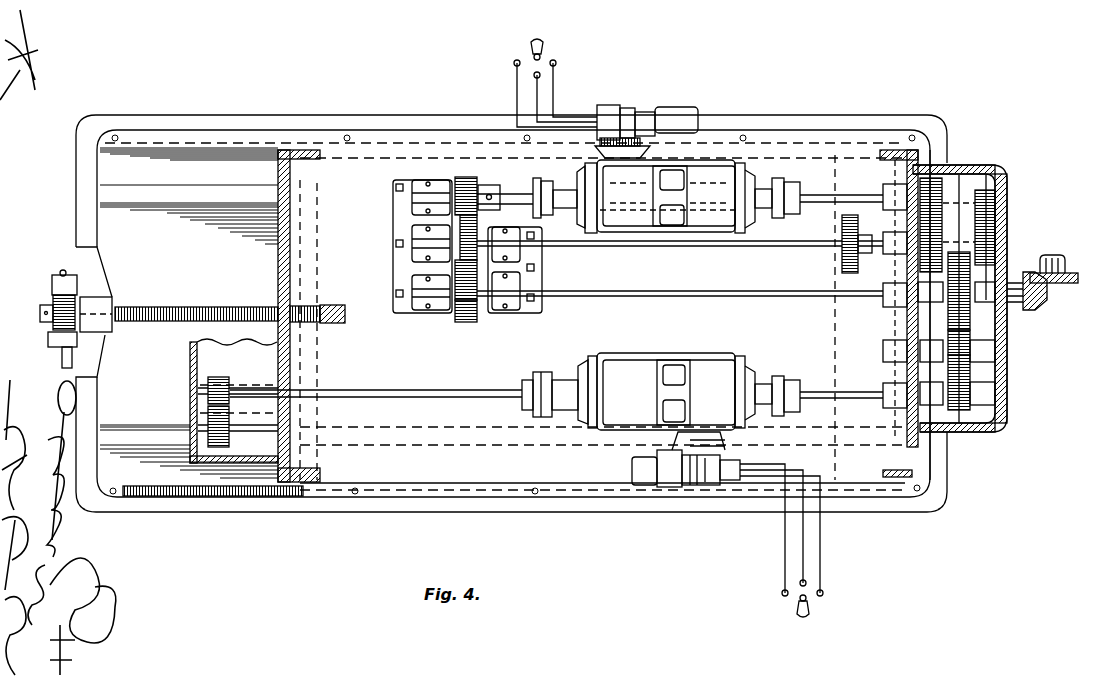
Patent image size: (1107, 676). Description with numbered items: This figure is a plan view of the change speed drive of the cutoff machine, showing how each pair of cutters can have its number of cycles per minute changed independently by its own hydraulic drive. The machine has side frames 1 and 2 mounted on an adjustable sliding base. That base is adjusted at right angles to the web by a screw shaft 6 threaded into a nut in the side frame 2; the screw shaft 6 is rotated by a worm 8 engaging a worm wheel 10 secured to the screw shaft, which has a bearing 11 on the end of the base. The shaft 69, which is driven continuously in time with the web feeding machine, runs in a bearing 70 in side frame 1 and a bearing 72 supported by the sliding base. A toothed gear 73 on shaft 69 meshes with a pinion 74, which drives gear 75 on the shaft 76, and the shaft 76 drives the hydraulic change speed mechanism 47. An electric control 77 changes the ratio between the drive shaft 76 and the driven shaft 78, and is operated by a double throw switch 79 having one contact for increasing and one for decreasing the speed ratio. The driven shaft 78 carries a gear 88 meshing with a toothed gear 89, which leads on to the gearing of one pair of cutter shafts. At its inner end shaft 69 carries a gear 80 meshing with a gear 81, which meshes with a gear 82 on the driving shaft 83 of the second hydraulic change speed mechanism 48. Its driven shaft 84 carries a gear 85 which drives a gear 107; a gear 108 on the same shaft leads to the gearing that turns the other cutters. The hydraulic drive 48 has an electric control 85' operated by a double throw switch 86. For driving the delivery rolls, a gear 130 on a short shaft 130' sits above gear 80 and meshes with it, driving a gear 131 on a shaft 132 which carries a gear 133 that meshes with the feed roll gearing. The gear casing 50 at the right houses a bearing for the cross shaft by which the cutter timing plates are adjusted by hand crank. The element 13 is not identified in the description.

The side frame 1 is at (945, 462).
The side frame 2 is at (278, 262).
The screw shaft 6 is at (150, 306).
The worm 8 is at (63, 270).
The worm wheel 10 is at (52, 282).
The bearing 11 is at (108, 303).
The nut 13 is at (343, 313).
The change speed mechanism 47 is at (626, 355).
The change speed mechanism 48 is at (728, 240).
The gear casing 50 is at (1007, 420).
The shaft 69 is at (843, 300).
The bearing 70 is at (885, 306).
The bearing 72 is at (512, 313).
The toothed gear 73 is at (1000, 248).
The pinion 74 is at (973, 332).
The gear 75 is at (1000, 375).
The shaft 76 is at (838, 390).
The electric control 77 is at (688, 488).
The driven shaft 78 is at (448, 399).
The double throw switch 79 is at (785, 596).
The gear 80 is at (467, 322).
The gear 81 is at (478, 238).
The gear 82 is at (462, 177).
The driving shaft 83 is at (515, 194).
The driven shaft 84 is at (822, 190).
The gear 85 is at (980, 146).
The electric control 85' is at (646, 114).
The double throw switch 86 is at (540, 58).
The gear 88 is at (207, 377).
The toothed gear 89 is at (200, 420).
The gear 107 is at (930, 240).
The gear 108 is at (998, 213).
The gear 130 is at (424, 261).
The short shaft 130' is at (400, 291).
The gear 131 is at (428, 233).
The shaft 132 is at (655, 253).
The gear 133 is at (842, 258).